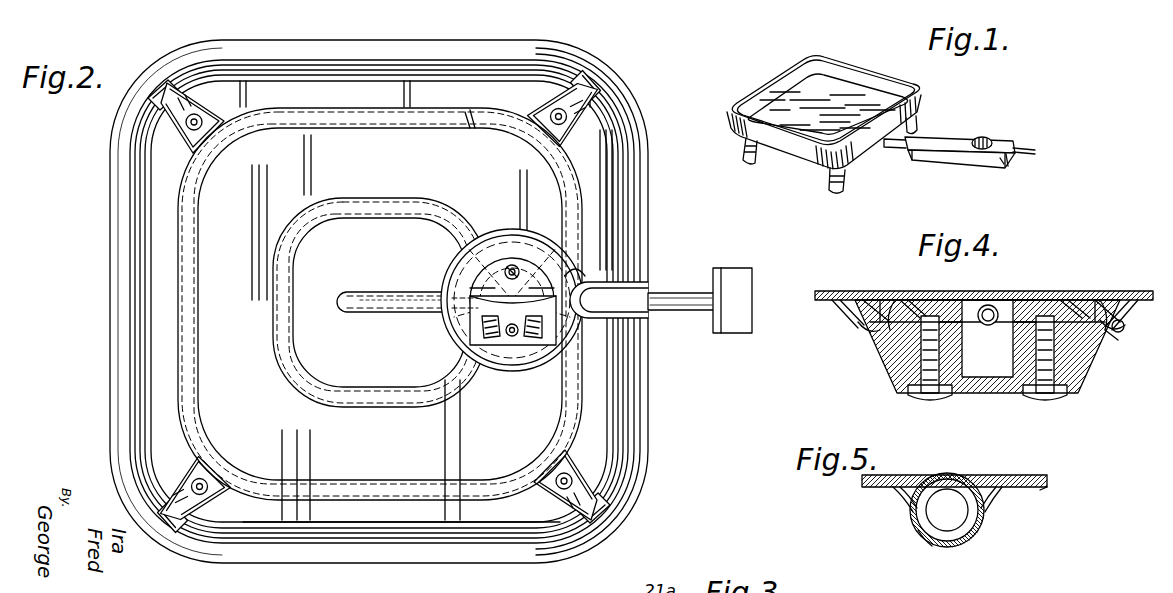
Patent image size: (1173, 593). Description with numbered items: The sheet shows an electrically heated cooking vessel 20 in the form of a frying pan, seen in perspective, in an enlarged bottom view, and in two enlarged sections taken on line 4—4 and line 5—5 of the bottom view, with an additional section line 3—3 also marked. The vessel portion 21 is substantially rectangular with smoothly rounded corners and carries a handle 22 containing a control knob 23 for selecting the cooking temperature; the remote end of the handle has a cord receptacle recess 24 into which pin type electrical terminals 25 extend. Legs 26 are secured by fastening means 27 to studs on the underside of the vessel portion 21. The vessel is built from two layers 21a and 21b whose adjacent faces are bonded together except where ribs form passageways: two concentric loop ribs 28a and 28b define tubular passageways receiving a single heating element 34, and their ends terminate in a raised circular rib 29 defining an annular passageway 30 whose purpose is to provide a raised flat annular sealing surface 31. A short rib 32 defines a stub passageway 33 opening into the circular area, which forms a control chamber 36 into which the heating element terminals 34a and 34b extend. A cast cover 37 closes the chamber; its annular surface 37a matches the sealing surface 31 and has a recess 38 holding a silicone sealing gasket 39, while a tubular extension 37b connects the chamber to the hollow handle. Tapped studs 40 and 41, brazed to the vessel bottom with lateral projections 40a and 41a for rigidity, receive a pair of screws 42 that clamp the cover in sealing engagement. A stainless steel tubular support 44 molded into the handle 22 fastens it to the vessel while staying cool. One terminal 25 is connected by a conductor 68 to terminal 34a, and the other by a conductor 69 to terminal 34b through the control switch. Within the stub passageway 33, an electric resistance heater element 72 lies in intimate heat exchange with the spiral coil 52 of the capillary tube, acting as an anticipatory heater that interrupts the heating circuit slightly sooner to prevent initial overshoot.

In FIG. 2, the cooking vessel 20 is at (100, 410).
In FIG. 1, the cooking vessel 20 is at (777, 50).
In FIG. 2, the vessel portion 21 is at (653, 430).
In FIG. 1, the vessel portion 21 is at (859, 55).
In FIG. 4, the layer 21a is at (838, 290).
In FIG. 5, the layer 21a is at (1034, 477).
In FIG. 4, the layer 21b is at (822, 302).
In FIG. 5, the layer 21b is at (1040, 489).
In FIG. 2, the handle 22 is at (728, 266).
In FIG. 1, the handle 22 is at (946, 138).
In FIG. 1, the control knob 23 is at (990, 138).
In FIG. 1, the cord receptacle recess 24 is at (1035, 151).
In FIG. 1, the pin type electrical terminals 25 is at (1012, 162).
In FIG. 2, the legs 26 is at (170, 88).
In FIG. 1, the legs 26 is at (755, 165).
In FIG. 2, the fastening means 27 is at (188, 136).
In FIG. 2, the rib 28a is at (404, 110).
In FIG. 2, the rib 28b is at (343, 200).
In FIG. 2, the circular rib 29 is at (540, 242).
In FIG. 4, the circular rib 29 is at (858, 328).
In FIG. 4, the annular passageway 30 is at (866, 300).
In FIG. 2, the annular sealing surface 31 is at (506, 346).
In FIG. 4, the annular sealing surface 31 is at (892, 302).
In FIG. 2, the short rib 32 is at (347, 293).
In FIG. 5, the short rib 32 is at (972, 538).
In FIG. 5, the stub passageway 33 is at (985, 483).
In FIG. 2, the heating element 34 is at (471, 110).
In FIG. 2, the terminal 34a is at (581, 278).
In FIG. 2, the terminal 34b is at (470, 336).
In FIG. 2, the control chamber 36 is at (560, 348).
In FIG. 4, the control chamber 36 is at (1000, 364).
In FIG. 2, the cover 37 is at (515, 303).
In FIG. 4, the cover 37 is at (1085, 380).
In FIG. 4, the annular surface 37a is at (1098, 302).
In FIG. 2, the tubular extension 37b is at (604, 292).
In FIG. 4, the recess 38 is at (1116, 334).
In FIG. 4, the sealing gasket 39 is at (1126, 322).
In FIG. 2, the tapped stud 40 is at (518, 245).
In FIG. 4, the tapped stud 40 is at (987, 324).
In FIG. 4, the lateral projection 40a is at (1075, 300).
In FIG. 2, the tapped stud 41 is at (486, 360).
In FIG. 4, the tapped stud 41 is at (965, 300).
In FIG. 4, the lateral projection 41a is at (918, 300).
In FIG. 2, the screws 42 is at (515, 267).
In FIG. 4, the screws 42 is at (1045, 400).
In FIG. 2, the tubular support 44 is at (677, 308).
In FIG. 1, the tubular support 44 is at (894, 150).
In FIG. 4, the spiral coil 52 is at (1018, 302).
In FIG. 5, the spiral coil 52 is at (930, 545).
In FIG. 2, the conductor 68 is at (568, 328).
In FIG. 2, the conductor 69 is at (530, 347).
In FIG. 2, the heater element 72 is at (358, 316).
In FIG. 4, the heater element 72 is at (990, 304).
In FIG. 5, the heater element 72 is at (908, 498).
In FIG. 2, the section line 3- 3 is at (82, 327).
In FIG. 2, the section line 4— 4 is at (515, 203).
In FIG. 2, the section line 5— 5 is at (401, 292).